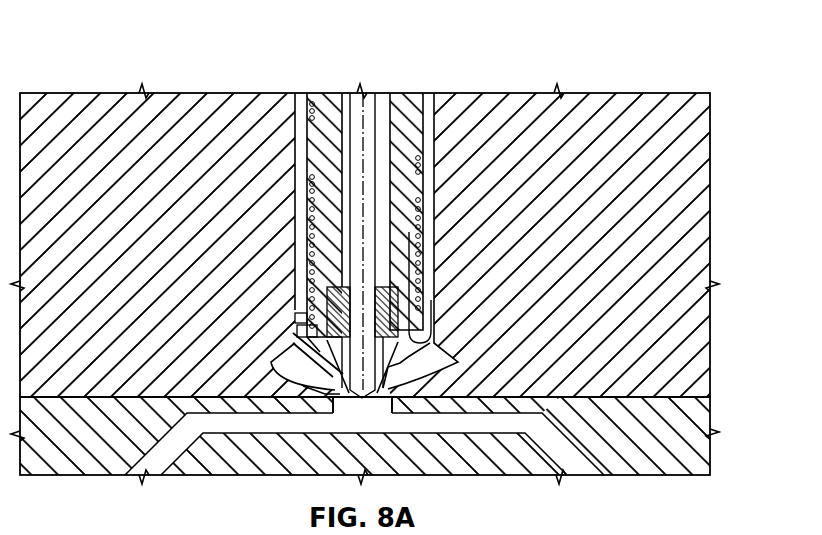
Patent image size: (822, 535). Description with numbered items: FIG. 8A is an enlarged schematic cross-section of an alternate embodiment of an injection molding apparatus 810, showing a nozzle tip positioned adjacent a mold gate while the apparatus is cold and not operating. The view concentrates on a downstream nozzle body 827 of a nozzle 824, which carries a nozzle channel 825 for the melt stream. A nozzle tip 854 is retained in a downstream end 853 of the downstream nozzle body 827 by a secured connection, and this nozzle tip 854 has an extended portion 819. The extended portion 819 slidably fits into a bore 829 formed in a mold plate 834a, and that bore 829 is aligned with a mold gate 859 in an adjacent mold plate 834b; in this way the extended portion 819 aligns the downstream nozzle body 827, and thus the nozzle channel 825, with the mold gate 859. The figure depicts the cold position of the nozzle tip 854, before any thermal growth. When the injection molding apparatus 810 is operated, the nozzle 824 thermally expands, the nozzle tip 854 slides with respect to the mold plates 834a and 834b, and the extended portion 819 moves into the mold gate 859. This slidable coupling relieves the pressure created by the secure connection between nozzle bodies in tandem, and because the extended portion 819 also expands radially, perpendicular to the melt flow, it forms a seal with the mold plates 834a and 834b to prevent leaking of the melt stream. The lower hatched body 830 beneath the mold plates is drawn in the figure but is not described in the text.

The injection molding apparatus 810 is at (540, 80).
The extended portion 819 is at (394, 378).
The nozzle 824 is at (328, 228).
The nozzle channel 825 is at (414, 228).
The downstream nozzle body 827 is at (402, 138).
The bore 829 is at (303, 386).
The lower body 830 is at (567, 453).
The mold plate 834a is at (682, 335).
The mold plate 834b is at (682, 417).
The downstream end 853 is at (293, 337).
The nozzle tip 854 is at (299, 348).
The mold gate 859 is at (337, 400).